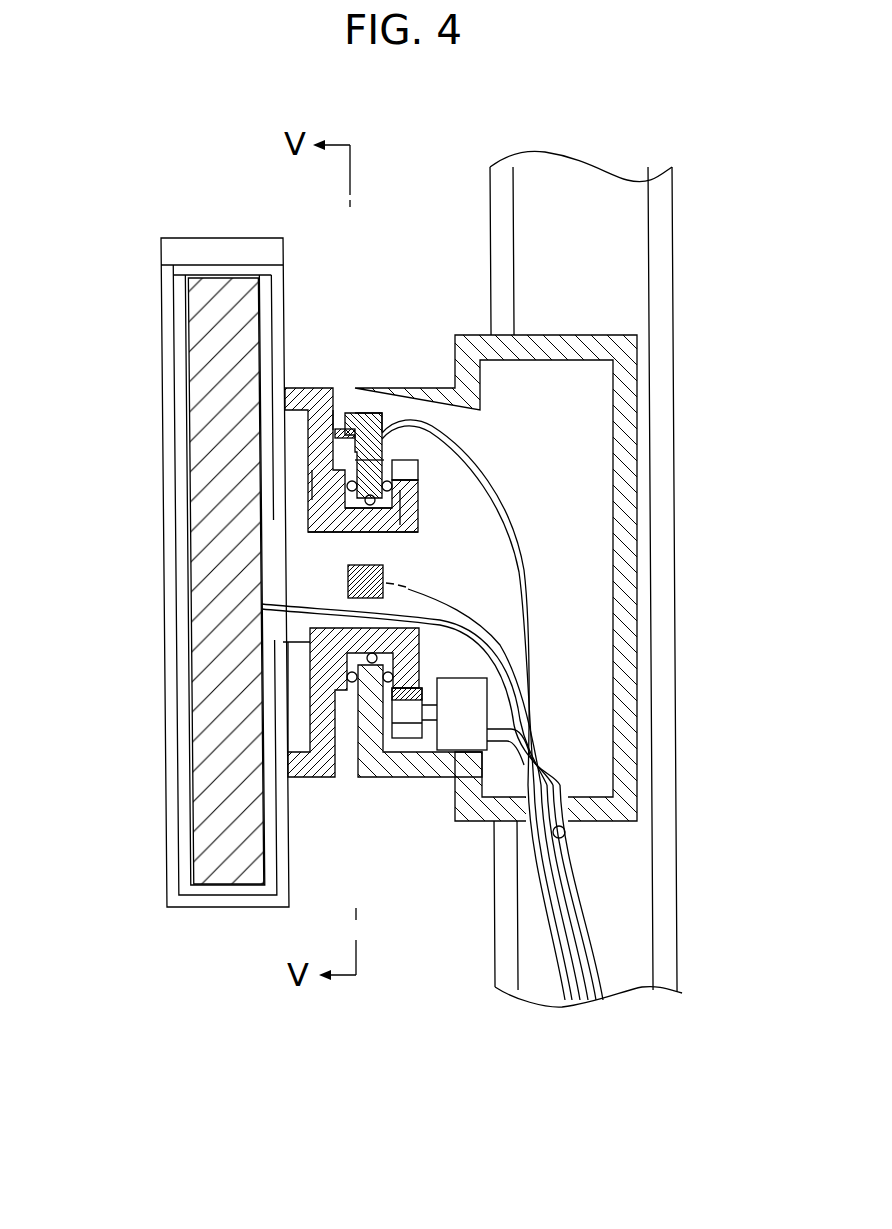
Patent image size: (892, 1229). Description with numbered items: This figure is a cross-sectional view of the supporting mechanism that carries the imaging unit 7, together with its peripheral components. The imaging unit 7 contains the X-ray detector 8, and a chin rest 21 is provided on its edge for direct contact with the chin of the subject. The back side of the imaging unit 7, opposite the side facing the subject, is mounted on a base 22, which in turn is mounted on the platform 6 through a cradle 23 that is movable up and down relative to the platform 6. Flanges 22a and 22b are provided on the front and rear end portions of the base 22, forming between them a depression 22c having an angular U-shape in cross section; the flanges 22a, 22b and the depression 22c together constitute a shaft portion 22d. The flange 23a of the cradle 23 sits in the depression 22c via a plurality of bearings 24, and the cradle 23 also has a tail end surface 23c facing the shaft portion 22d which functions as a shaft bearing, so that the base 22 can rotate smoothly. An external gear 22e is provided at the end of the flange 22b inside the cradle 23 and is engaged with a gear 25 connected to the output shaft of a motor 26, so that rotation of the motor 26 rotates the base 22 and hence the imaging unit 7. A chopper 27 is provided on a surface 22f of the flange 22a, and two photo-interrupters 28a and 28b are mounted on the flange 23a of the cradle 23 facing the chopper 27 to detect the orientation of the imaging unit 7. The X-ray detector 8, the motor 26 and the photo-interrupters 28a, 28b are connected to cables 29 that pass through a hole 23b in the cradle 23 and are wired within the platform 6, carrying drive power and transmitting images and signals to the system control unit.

The platform 6 is at (663, 769).
The imaging unit 7 is at (171, 830).
The X-ray detector 8 is at (225, 671).
The chin rest 21 is at (168, 243).
The base 22 is at (314, 390).
The flange 22a is at (332, 498).
The flange 22b is at (405, 503).
The depression 22c is at (358, 521).
The shaft portion 22d is at (343, 535).
The external gear 22e is at (417, 428).
The surface 22f is at (336, 417).
The cradle 23 is at (546, 340).
The flange 23a is at (357, 462).
The hole 23b is at (563, 837).
The tail end surface 23c is at (357, 495).
The bearings 24 is at (418, 463).
The gear 25 is at (405, 718).
The motor 26 is at (467, 693).
The chopper 27 is at (348, 413).
The photo-interrupter 28a is at (365, 417).
The photo-interrupter 28b is at (377, 573).
The cables 29 is at (540, 988).